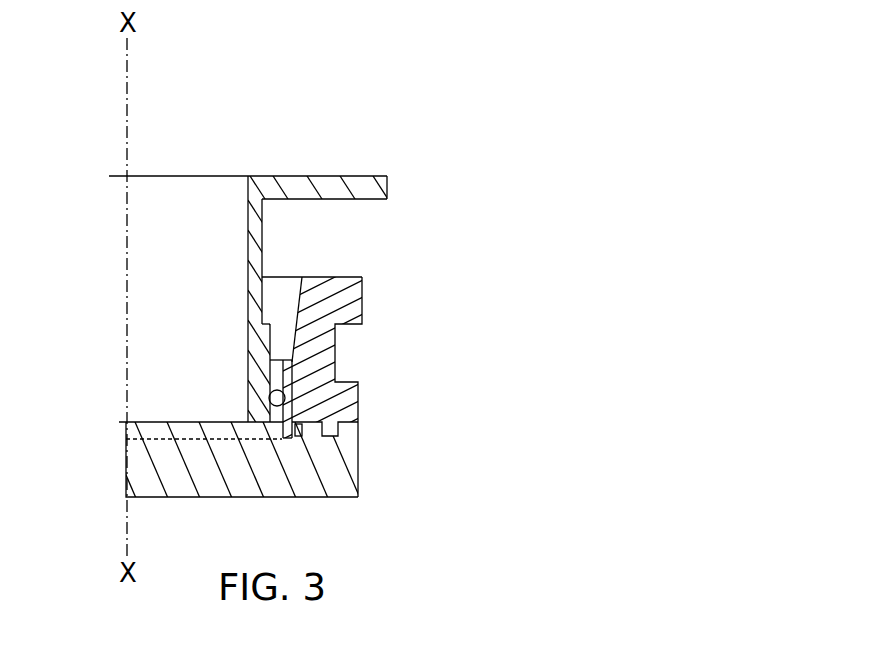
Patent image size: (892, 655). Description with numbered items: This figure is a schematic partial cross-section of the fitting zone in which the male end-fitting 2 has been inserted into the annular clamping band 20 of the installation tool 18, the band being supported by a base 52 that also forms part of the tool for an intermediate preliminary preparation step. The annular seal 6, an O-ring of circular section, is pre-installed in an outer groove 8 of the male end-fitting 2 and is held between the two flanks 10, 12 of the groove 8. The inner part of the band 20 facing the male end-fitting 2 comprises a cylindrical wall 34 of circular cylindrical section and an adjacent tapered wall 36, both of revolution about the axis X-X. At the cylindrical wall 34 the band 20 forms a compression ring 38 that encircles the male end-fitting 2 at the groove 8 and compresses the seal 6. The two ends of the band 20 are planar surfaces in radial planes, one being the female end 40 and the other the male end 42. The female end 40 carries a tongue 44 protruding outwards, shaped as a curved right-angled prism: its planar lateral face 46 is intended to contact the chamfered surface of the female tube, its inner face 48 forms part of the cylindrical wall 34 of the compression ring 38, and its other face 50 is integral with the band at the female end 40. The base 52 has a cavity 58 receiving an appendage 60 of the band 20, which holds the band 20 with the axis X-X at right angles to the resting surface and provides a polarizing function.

The male end-fitting 2 is at (357, 190).
The annular seal 6 is at (270, 385).
The outer groove 8 is at (273, 407).
The flank 10 is at (296, 268).
The flank 12 is at (282, 408).
The installation tool 18 is at (338, 287).
The annular clamping band 20 is at (338, 385).
The cylindrical wall 34 is at (295, 365).
The tapered wall 36 is at (419, 314).
The compression ring 38 is at (352, 415).
The female end 40 is at (345, 428).
The male end 42 is at (325, 277).
The tongue 44 is at (306, 482).
The planar lateral face 46 is at (343, 465).
The inner face 48 is at (345, 418).
The face 50 is at (350, 410).
The base 52 is at (142, 453).
The cavity 58 is at (330, 437).
The appendage 60 is at (305, 431).